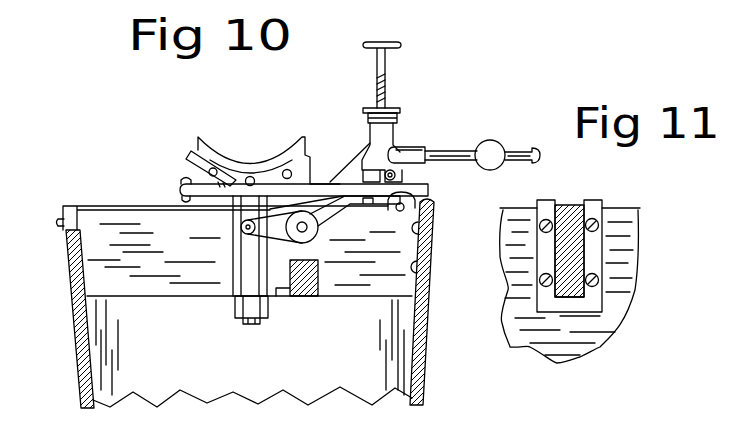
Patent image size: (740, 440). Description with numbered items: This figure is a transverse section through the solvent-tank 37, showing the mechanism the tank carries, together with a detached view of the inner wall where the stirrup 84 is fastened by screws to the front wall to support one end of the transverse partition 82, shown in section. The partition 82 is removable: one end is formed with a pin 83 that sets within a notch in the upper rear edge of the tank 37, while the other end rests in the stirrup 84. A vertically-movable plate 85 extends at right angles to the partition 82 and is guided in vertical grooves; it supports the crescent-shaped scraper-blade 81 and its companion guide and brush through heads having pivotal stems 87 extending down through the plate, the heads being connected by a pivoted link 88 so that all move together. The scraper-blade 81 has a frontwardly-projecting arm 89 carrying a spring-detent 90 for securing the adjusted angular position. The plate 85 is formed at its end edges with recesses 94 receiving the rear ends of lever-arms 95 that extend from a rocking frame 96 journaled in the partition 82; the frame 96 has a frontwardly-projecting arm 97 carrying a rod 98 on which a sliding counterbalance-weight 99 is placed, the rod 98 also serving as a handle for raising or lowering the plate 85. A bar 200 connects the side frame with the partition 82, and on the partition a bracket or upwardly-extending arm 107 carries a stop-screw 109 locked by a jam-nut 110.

In FIG. 10, the solvent-tank 37 is at (239, 300).
In FIG. 11, the solvent-tank 37 is at (623, 308).
In FIG. 10, the scraper-blade 81 is at (248, 168).
In FIG. 10, the transverse partition 82 is at (246, 254).
In FIG. 11, the transverse partition 82 is at (567, 210).
In FIG. 10, the pin 83 is at (57, 222).
In FIG. 10, the stirrup 84 is at (414, 262).
In FIG. 11, the stirrup 84 is at (593, 255).
In FIG. 10, the vertically-movable plate 85 is at (252, 275).
In FIG. 10, the pivotal stems 87 is at (245, 323).
In FIG. 10, the pivoted link 88 is at (181, 183).
In FIG. 10, the frontwardly-projecting arm 89 is at (428, 186).
In FIG. 10, the spring-detent 90 is at (358, 153).
In FIG. 10, the recesses 94 is at (242, 223).
In FIG. 10, the lever-arms 95 is at (275, 227).
In FIG. 10, the rocking frame 96 is at (318, 230).
In FIG. 10, the frontwardly-projecting arm 97 is at (402, 147).
In FIG. 10, the rod 98 is at (443, 153).
In FIG. 10, the counterbalance-weight 99 is at (493, 145).
In FIG. 10, the bracket or upwardly-extending arm 107 is at (380, 138).
In FIG. 10, the stop-screw 109 is at (387, 63).
In FIG. 10, the jam-nut 110 is at (401, 111).
In FIG. 10, the bar 200 is at (307, 288).